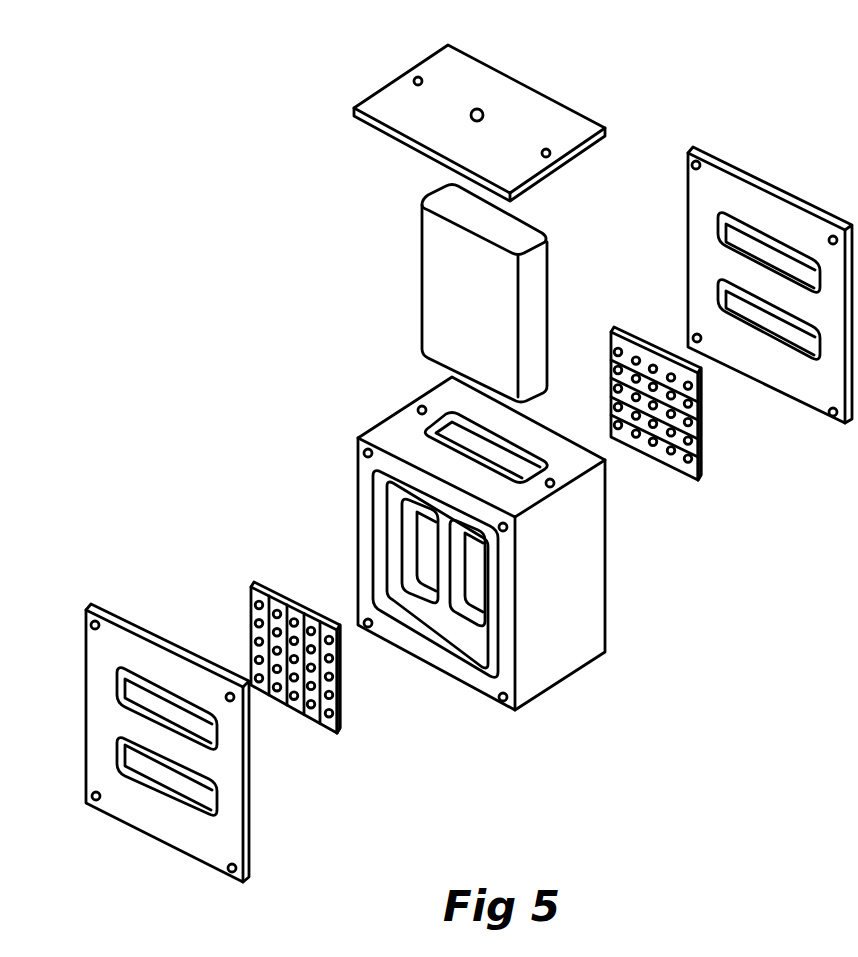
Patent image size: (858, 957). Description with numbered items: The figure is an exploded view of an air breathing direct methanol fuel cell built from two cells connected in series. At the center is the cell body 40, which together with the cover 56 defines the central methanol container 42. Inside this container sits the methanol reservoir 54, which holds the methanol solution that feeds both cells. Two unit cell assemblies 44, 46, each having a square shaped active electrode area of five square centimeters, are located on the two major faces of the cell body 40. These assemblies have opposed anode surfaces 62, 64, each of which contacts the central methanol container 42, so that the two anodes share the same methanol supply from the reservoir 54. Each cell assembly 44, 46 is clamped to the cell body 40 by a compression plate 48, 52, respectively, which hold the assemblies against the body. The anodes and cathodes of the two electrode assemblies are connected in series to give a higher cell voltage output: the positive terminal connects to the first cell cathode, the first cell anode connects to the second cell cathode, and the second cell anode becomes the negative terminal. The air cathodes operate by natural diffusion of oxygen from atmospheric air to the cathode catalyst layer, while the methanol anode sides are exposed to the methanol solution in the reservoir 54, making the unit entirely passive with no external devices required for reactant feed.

The cell body 40 is at (567, 573).
The central methanol container 42 is at (487, 459).
The unit cell assembly 44 is at (268, 592).
The unit cell assembly 46 is at (705, 461).
The compression plate 48 is at (145, 635).
The compression plate 52 is at (748, 177).
The methanol reservoir 54 is at (462, 323).
The cover 56 is at (457, 133).
The anode surface 62 is at (629, 333).
The anode surface 64 is at (340, 713).